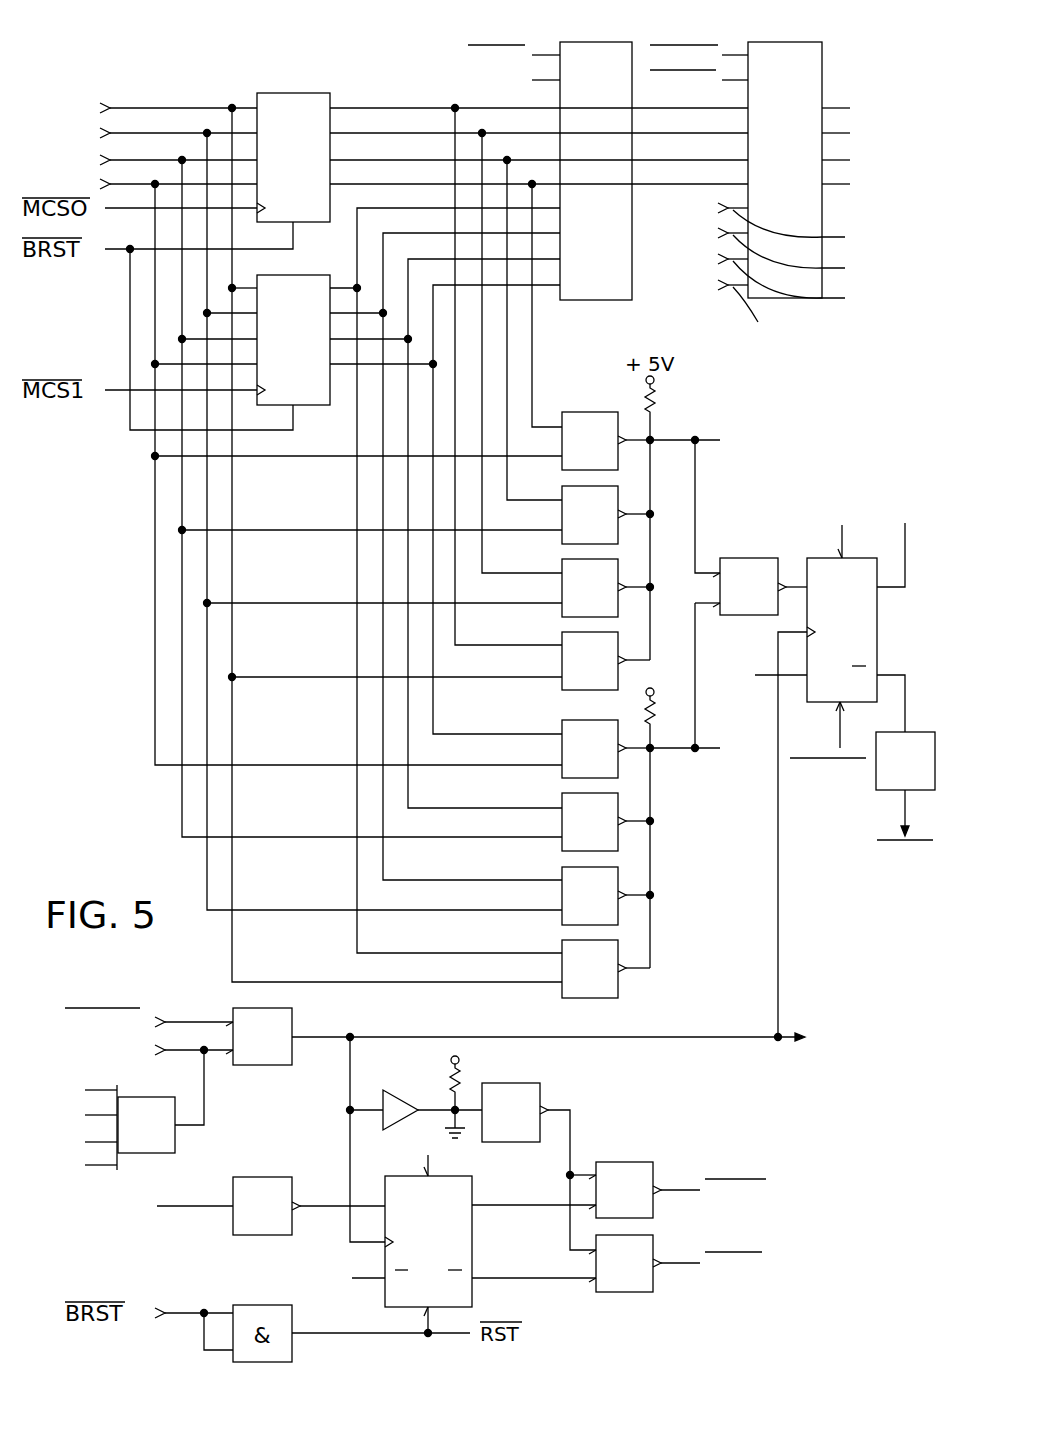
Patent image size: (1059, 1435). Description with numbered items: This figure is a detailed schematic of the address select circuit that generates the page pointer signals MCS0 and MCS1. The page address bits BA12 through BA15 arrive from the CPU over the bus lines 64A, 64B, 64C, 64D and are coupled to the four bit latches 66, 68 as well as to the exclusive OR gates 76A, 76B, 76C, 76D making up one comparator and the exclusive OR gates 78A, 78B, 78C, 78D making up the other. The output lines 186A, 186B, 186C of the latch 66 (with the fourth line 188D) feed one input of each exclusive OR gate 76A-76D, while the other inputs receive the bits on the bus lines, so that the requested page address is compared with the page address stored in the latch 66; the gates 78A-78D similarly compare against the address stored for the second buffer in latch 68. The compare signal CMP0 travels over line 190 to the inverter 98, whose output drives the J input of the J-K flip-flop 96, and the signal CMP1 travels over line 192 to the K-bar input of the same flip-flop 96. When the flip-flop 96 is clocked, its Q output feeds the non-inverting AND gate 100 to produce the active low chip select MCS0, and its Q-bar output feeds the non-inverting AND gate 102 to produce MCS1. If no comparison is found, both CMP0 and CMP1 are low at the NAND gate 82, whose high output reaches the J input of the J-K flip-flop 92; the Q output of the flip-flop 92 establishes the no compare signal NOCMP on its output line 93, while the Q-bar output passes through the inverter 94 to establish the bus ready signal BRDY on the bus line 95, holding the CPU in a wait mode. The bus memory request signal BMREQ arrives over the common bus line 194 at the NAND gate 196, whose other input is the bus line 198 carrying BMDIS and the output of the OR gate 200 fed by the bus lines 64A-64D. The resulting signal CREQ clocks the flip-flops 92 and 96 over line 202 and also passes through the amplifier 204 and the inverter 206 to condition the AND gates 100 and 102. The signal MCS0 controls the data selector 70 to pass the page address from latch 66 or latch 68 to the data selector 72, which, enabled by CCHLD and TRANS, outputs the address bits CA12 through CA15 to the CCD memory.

The bus line 64A is at (182, 107).
The bus line 64B is at (192, 133).
The bus line 64C is at (213, 160).
The bus line 64D is at (120, 184).
The four bit latch 66 is at (313, 98).
The four bit latch 68 is at (290, 280).
The data selector 70 is at (597, 48).
The data selector 72 is at (785, 47).
The exclusive OR gate 76A is at (612, 412).
The exclusive OR gate 76B is at (590, 492).
The exclusive OR gate 76C is at (578, 566).
The exclusive OR gate 76D is at (578, 640).
The exclusive OR gate 78A is at (568, 730).
The exclusive OR gate 78B is at (570, 805).
The exclusive OR gate 78C is at (570, 875).
The exclusive OR gate 78D is at (570, 950).
The NAND gate 82 is at (762, 560).
The J-K flip-flop 92 is at (831, 560).
The NOCMP output line 93 is at (893, 590).
The inverter 94 is at (880, 785).
The bus line 95 is at (903, 812).
The J-K flip-flop 96 is at (470, 1185).
The inverter 98 is at (266, 1177).
The non-inverting AND gate 100 is at (626, 1170).
The non-inverting AND gate 102 is at (640, 1285).
The output line 186A is at (344, 108).
The output line 186B is at (354, 133).
The output line 186C is at (367, 160).
The latched address line 188D is at (400, 184).
The line 190 is at (708, 437).
The line 192 is at (130, 433).
The common bus line 194 is at (206, 1020).
The NAND gate 196 is at (292, 1013).
The bus line 198 is at (214, 1053).
The OR gate 200 is at (175, 1140).
The line 202 is at (780, 960).
The amplifier 204 is at (395, 1095).
The inverter 206 is at (520, 1085).